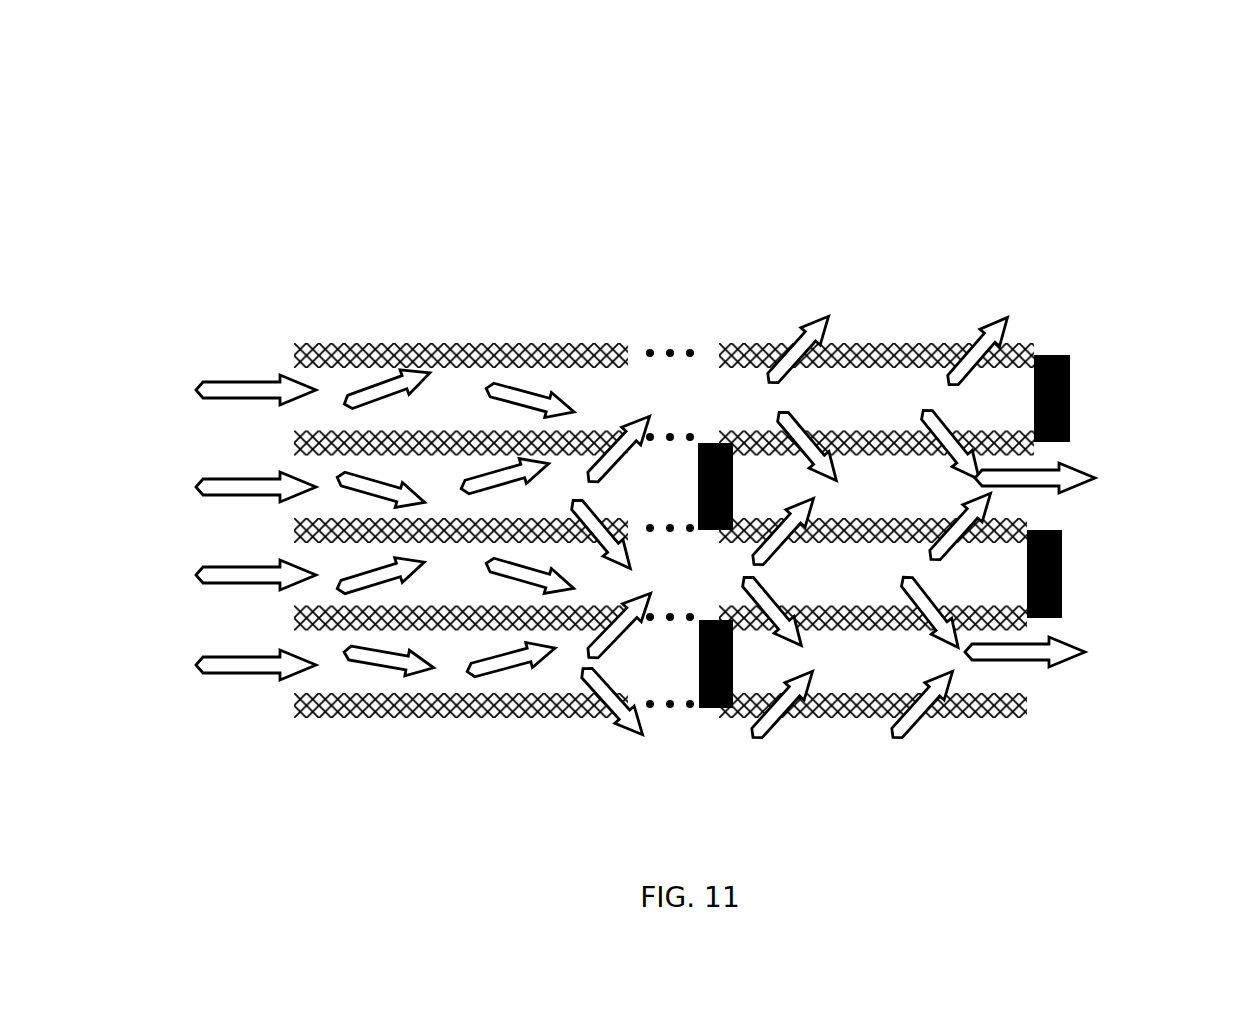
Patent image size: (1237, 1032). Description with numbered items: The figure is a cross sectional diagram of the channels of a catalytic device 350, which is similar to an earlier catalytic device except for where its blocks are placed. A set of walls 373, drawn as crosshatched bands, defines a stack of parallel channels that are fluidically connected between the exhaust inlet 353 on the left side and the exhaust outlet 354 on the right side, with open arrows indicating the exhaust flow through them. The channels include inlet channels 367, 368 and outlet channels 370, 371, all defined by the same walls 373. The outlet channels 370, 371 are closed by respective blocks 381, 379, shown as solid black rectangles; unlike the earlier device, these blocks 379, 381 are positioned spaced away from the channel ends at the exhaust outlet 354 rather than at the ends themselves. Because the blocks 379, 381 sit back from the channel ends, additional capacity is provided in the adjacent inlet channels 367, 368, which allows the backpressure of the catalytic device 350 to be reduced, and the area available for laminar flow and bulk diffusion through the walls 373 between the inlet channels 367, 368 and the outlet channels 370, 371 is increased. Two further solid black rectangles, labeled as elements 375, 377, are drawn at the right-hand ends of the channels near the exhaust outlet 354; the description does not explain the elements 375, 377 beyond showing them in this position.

The catalytic device 350 is at (962, 79).
The exhaust inlet 353 is at (375, 239).
The exhaust outlet 354 is at (995, 239).
The inlet channel 367 is at (366, 370).
The inlet channel 368 is at (313, 559).
The outlet channel 370 is at (1137, 464).
The outlet channel 371 is at (1074, 693).
The walls 373 is at (840, 355).
The light absorber 375 is at (1070, 398).
The light absorber 377 is at (1062, 574).
The block 379 is at (699, 665).
The block 381 is at (700, 443).